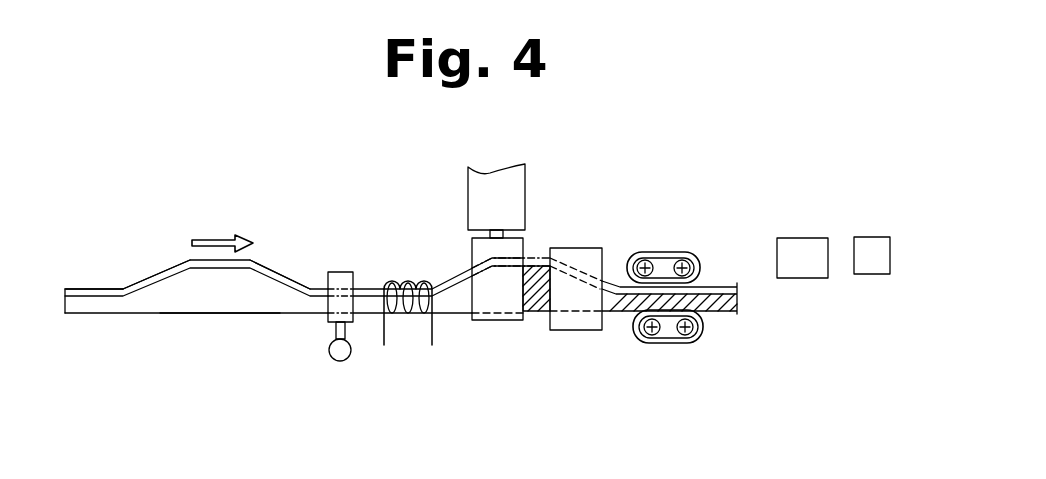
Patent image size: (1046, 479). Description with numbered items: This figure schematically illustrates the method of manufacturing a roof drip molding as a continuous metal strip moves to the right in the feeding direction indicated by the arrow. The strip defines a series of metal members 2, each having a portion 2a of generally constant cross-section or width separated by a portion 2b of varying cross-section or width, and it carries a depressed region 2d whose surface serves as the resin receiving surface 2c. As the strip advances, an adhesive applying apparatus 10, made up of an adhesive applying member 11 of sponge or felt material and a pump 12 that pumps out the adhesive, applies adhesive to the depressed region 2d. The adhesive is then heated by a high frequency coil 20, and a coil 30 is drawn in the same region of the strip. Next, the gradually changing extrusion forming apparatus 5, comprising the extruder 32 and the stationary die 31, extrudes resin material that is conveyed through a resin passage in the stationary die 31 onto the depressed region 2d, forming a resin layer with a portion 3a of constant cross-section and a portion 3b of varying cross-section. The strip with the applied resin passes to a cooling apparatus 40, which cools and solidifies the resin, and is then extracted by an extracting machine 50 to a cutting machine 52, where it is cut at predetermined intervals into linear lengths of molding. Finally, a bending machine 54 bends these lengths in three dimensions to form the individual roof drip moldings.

The metal member 2 is at (157, 302).
The portion having a generally constant cross-section 2a is at (92, 302).
The portion having a changing cross-section 2b is at (168, 270).
The resin receiving surface 2c is at (218, 303).
The depressed region 2d is at (267, 282).
The portion of generally constant cross-section 3a is at (717, 304).
The portion of varying cross-section 3b is at (615, 312).
The gradually changing extrusion forming apparatus 5 is at (457, 223).
The adhesive applying apparatus 10 is at (320, 328).
The adhesive applying member 11 is at (340, 275).
The pump 12 is at (350, 357).
The high frequency coil 20 is at (385, 335).
The induction heating coil 30 is at (405, 272).
The stationary die 31 is at (522, 247).
The extruder 32 is at (518, 193).
The cooling apparatus 40 is at (597, 250).
The extracting machine 50 is at (675, 252).
The cutting machine 52 is at (803, 238).
The bending machine 54 is at (870, 237).